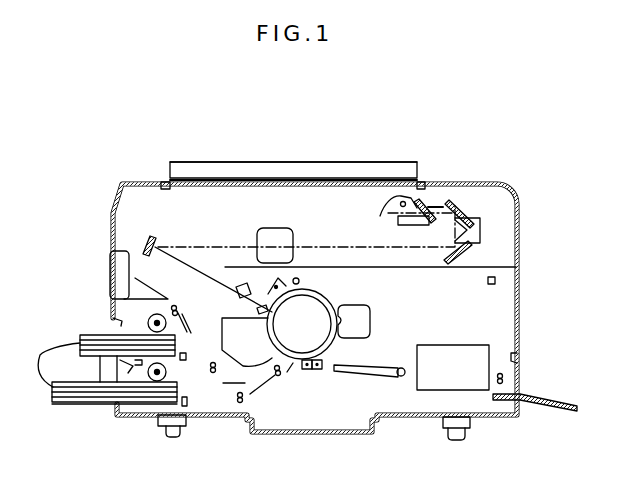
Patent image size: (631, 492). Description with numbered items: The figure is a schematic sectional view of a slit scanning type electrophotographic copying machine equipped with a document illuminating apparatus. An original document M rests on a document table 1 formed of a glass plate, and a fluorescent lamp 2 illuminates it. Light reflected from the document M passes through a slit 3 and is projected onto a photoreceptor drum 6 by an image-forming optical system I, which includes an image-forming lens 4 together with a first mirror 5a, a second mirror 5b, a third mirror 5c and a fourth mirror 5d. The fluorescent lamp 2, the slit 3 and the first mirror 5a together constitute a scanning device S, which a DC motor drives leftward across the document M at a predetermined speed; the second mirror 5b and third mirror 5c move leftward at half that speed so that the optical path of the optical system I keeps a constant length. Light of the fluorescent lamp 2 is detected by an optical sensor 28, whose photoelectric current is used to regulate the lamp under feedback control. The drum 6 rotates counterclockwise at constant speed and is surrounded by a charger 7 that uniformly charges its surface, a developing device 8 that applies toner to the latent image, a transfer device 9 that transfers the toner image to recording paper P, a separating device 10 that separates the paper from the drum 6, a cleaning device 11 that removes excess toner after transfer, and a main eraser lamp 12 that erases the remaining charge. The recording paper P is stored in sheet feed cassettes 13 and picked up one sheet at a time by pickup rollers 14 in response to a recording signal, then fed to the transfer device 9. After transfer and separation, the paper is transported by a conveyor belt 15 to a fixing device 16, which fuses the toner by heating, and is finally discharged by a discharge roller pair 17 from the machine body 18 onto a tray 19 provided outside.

The image-forming optical system I is at (259, 211).
The document table 1 is at (261, 182).
The original document M is at (362, 178).
The image-forming lens 4 is at (287, 228).
The slit 3 is at (428, 203).
The fluorescent lamp 2 is at (391, 219).
The first mirror 5a is at (443, 207).
The second mirror 5b is at (470, 223).
The third mirror 5c is at (472, 248).
The fourth mirror 5d is at (150, 237).
The scanning device S is at (471, 203).
The machine body 18 is at (520, 232).
The charger 7 is at (272, 282).
The main eraser lamp 12 is at (299, 279).
The photoreceptor drum 6 is at (330, 291).
The optical sensor 28 is at (234, 293).
The cleaning device 11 is at (370, 320).
The developing device 8 is at (233, 350).
The transfer device 9 is at (307, 370).
The separating device 10 is at (322, 367).
The conveyor belt 15 is at (394, 365).
The fixing device 16 is at (440, 380).
The discharge roller pair 17 is at (500, 374).
The tray 19 is at (550, 397).
The pickup rollers 14 is at (150, 318).
The recording paper P is at (99, 385).
The sheet feed cassettes 13 is at (105, 368).